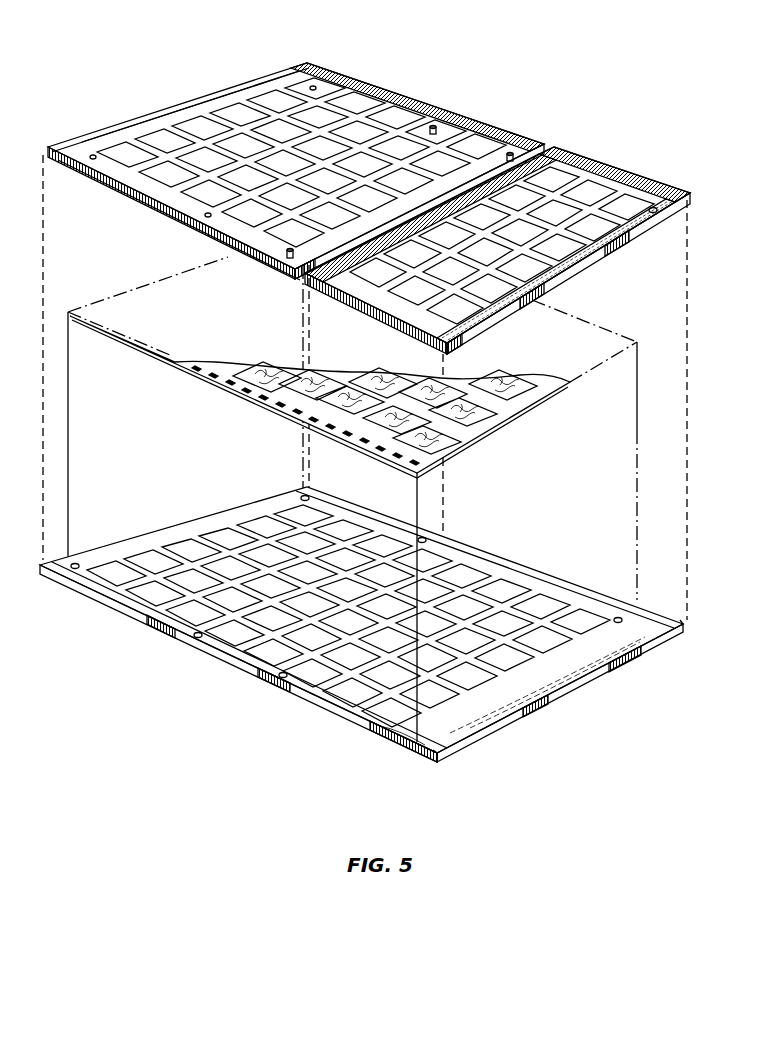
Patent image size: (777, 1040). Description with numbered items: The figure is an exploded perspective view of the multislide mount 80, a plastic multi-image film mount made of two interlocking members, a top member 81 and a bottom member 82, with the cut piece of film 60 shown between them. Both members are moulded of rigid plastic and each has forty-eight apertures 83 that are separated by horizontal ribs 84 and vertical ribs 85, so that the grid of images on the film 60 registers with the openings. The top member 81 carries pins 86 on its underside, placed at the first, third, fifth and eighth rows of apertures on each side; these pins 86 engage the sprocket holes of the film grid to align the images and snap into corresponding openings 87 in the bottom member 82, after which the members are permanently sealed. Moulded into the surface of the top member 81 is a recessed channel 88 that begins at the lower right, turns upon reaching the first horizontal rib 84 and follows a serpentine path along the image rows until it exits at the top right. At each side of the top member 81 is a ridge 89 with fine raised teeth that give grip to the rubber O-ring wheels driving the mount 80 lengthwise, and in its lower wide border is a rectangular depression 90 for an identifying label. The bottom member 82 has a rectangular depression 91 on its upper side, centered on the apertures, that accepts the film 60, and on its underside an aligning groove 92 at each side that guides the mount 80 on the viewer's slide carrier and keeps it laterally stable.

The film 60 is at (507, 413).
The multislide mount 80 is at (468, 94).
The top member 81 is at (137, 199).
The bottom member 82 is at (147, 628).
The apertures 83 is at (167, 137).
The horizontal ribs 84 is at (250, 123).
The vertical ribs 85 is at (330, 82).
The pins 86 is at (505, 157).
The openings 87 is at (77, 563).
The recessed channel 88 is at (653, 210).
The ridge 89 is at (380, 90).
The rectangular depression 90 is at (563, 252).
The rectangular depression 91 is at (583, 597).
The aligning groove 92 is at (677, 635).